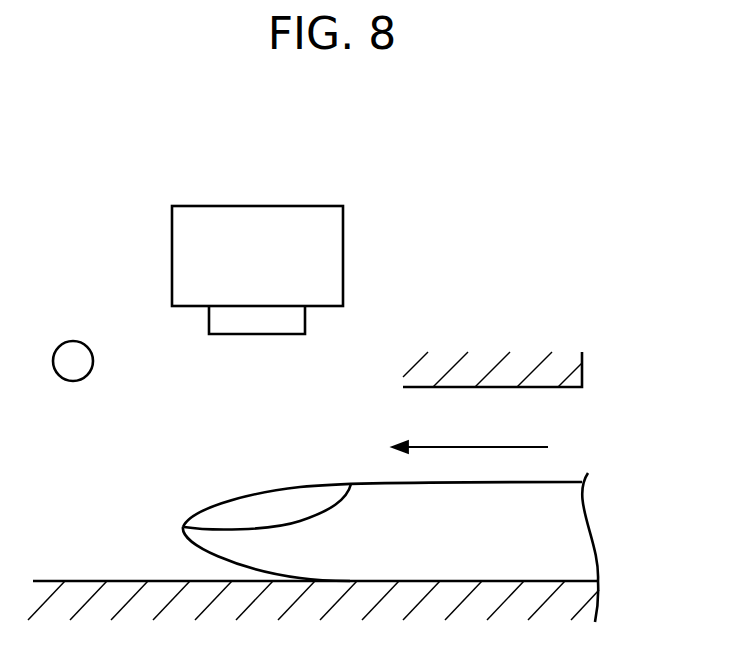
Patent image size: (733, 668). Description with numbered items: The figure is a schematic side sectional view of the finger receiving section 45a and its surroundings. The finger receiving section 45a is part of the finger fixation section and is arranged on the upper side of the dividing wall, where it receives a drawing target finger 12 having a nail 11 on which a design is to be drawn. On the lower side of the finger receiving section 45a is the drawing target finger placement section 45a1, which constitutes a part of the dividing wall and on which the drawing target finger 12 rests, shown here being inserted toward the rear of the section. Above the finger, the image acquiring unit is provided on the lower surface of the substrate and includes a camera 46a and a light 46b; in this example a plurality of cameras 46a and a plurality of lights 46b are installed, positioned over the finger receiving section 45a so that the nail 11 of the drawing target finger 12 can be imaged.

The camera 46a is at (259, 214).
The light 46b is at (75, 353).
The finger receiving section 45a is at (516, 421).
The drawing target finger placement section 45a1 is at (136, 578).
The nail 11 is at (257, 510).
The drawing target finger 12 is at (381, 494).